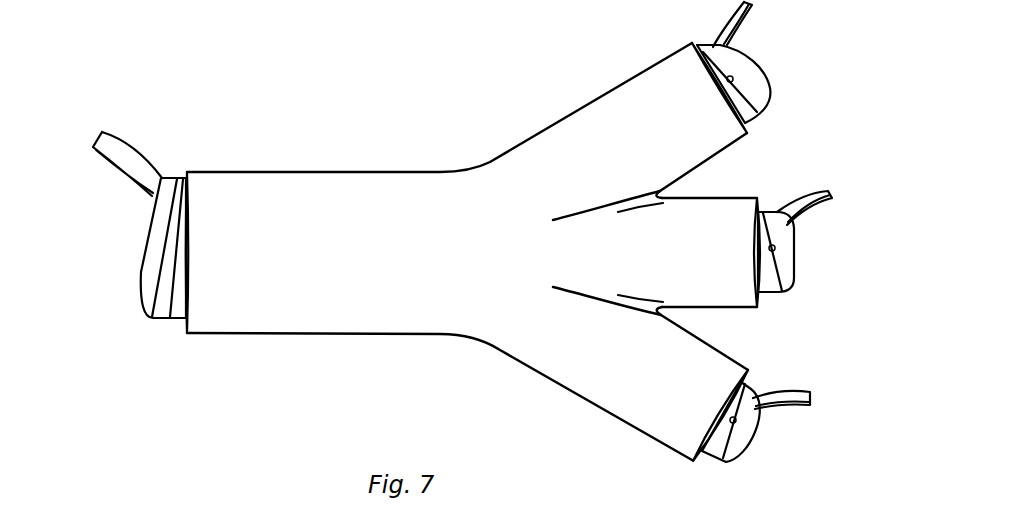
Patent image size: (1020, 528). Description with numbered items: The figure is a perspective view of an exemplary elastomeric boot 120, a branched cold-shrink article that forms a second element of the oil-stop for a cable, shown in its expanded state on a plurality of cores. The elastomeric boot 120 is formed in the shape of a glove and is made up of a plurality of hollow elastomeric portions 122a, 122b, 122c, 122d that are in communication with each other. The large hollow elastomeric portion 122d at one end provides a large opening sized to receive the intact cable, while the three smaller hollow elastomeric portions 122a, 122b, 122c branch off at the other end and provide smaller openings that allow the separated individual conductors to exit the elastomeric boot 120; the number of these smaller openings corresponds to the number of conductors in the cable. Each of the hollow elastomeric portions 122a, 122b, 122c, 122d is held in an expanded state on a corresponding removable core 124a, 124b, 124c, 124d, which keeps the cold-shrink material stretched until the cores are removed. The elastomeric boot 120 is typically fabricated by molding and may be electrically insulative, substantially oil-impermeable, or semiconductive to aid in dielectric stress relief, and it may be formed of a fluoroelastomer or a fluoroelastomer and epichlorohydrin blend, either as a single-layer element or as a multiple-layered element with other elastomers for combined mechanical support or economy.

The elastomeric boot 120 is at (274, 90).
The hollow elastomeric portion 122a is at (643, 83).
The hollow elastomeric portion 122b is at (703, 213).
The hollow elastomeric portion 122c is at (645, 425).
The hollow elastomeric portion 122d is at (263, 320).
The removable core 124a is at (750, 78).
The removable core 124b is at (787, 263).
The removable core 124c is at (737, 430).
The removable core 124d is at (150, 265).